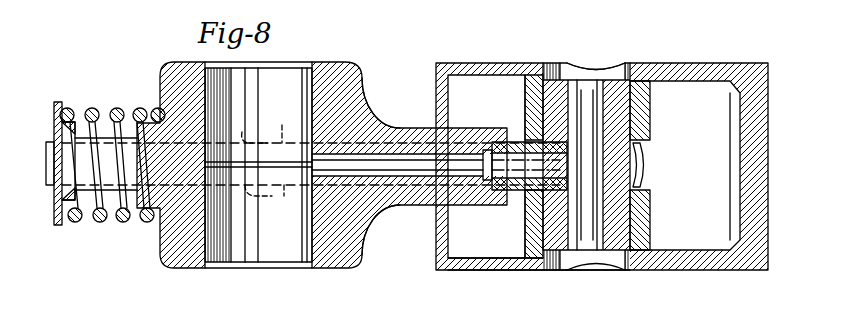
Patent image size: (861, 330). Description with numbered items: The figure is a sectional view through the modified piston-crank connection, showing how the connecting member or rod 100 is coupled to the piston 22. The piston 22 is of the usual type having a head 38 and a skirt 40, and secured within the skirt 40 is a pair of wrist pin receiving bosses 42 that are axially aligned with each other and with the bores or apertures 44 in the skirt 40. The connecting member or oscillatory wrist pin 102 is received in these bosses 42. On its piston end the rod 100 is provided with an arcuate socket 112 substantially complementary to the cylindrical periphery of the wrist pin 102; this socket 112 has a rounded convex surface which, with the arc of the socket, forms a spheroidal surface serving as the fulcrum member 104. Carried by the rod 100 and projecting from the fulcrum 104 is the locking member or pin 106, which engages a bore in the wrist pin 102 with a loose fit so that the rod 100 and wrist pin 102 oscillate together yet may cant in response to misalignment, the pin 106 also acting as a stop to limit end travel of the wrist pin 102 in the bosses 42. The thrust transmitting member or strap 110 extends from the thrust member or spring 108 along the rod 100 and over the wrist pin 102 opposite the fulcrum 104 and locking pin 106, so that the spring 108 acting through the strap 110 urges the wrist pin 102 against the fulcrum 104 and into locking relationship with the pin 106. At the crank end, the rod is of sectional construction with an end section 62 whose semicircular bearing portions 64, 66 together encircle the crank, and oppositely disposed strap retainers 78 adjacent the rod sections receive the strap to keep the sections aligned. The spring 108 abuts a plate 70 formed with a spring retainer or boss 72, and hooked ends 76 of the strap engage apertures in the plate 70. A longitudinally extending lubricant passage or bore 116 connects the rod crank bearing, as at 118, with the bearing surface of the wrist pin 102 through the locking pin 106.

The piston 22 is at (505, 63).
The head 38 is at (758, 108).
The skirt 40 is at (510, 269).
The wrist pin receiving bosses 42 is at (530, 244).
The bores or apertures 44 is at (613, 72).
The end section 62 is at (165, 88).
The semicircular strap or bearing portion 64 is at (312, 239).
The semicircular strap or bearing portion 66 is at (212, 255).
The plate 70 is at (58, 131).
The spring retainer or boss 72 is at (68, 196).
The hooked ends 76 is at (46, 158).
The strap retainers 78 is at (252, 128).
The connecting member or rod 100 is at (392, 211).
The connecting member or oscillatory wrist pin 102 is at (624, 130).
The fulcrum member 104 is at (560, 167).
The locking member or pin 106 is at (500, 191).
The thrust member or spring 108 is at (102, 222).
The thrust transmitting member or strap 110 is at (82, 150).
The arcuate socket 112 is at (486, 182).
The lubricant passage or bore 116 is at (420, 180).
The rod crank bearing 118 is at (312, 159).